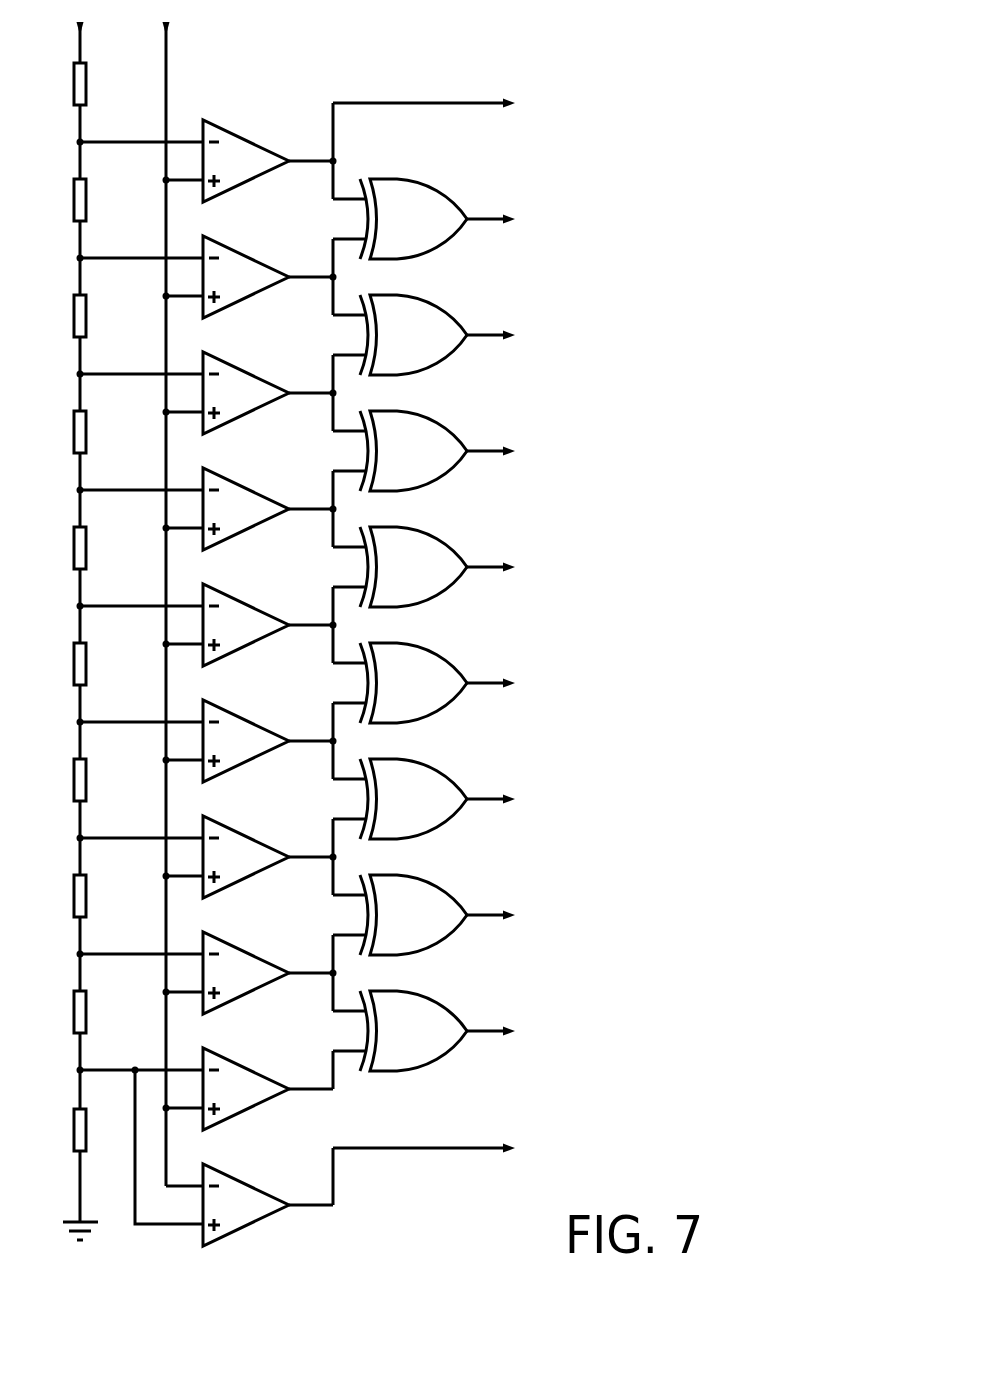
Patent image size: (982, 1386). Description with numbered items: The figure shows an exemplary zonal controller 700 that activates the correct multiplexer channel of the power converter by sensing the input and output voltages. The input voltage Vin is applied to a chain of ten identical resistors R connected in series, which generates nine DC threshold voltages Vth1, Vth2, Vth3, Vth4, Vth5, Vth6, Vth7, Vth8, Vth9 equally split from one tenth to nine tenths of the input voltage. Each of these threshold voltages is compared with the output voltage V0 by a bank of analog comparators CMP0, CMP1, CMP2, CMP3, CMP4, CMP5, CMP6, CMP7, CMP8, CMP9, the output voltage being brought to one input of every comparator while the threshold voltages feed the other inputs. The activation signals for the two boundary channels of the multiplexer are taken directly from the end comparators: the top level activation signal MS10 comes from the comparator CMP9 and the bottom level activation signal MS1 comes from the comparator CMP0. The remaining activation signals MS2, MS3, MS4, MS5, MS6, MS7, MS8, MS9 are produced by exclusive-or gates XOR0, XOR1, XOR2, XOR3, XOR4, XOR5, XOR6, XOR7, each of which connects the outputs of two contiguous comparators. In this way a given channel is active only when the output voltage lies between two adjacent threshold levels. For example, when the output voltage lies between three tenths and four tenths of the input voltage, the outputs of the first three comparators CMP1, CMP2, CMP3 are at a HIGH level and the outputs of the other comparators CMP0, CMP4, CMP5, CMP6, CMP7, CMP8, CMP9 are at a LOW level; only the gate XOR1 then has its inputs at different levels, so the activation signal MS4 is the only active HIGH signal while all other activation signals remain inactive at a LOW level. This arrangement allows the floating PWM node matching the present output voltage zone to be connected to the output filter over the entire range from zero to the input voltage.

The zonal controller 700 is at (644, 68).
The input voltage Vin is at (85, 611).
The output voltage V0 is at (168, 593).
The resistor R is at (67, 607).
The threshold voltage Vth9 is at (140, 128).
The threshold voltage Vth8 is at (140, 244).
The threshold voltage Vth7 is at (140, 360).
The threshold voltage Vth6 is at (140, 476).
The threshold voltage Vth5 is at (140, 592).
The threshold voltage Vth4 is at (140, 708).
The threshold voltage Vth3 is at (140, 824).
The threshold voltage Vth2 is at (140, 940).
The threshold voltage Vth1 is at (140, 1056).
The analog comparator CMP9 is at (250, 161).
The analog comparator CMP8 is at (250, 277).
The analog comparator CMP7 is at (250, 393).
The analog comparator CMP6 is at (250, 509).
The analog comparator CMP5 is at (250, 625).
The analog comparator CMP4 is at (250, 741).
The analog comparator CMP3 is at (250, 857).
The analog comparator CMP2 is at (250, 973).
The analog comparator CMP1 is at (248, 1089).
The analog comparator CMP0 is at (234, 1158).
The exclusive-or gate XOR7 is at (400, 219).
The exclusive-or gate XOR6 is at (400, 335).
The exclusive-or gate XOR5 is at (400, 451).
The exclusive-or gate XOR4 is at (400, 567).
The exclusive-or gate XOR3 is at (400, 683).
The exclusive-or gate XOR2 is at (400, 799).
The exclusive-or gate XOR1 is at (400, 915).
The exclusive-or gate XOR0 is at (400, 1031).
The top level activation signal MS10 is at (454, 104).
The activation signal MS9 is at (515, 220).
The activation signal MS8 is at (515, 336).
The activation signal MS7 is at (515, 452).
The activation signal MS6 is at (515, 568).
The activation signal MS5 is at (515, 684).
The activation signal MS4 is at (515, 800).
The activation signal MS3 is at (515, 916).
The activation signal MS2 is at (515, 1032).
The bottom level activation signal MS1 is at (448, 1149).